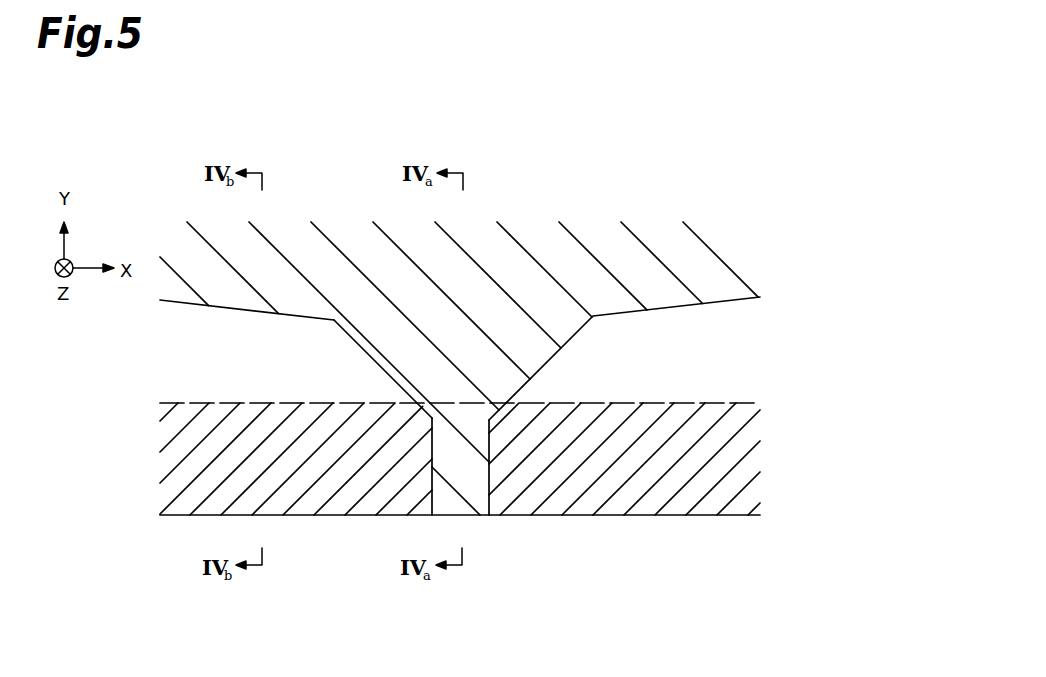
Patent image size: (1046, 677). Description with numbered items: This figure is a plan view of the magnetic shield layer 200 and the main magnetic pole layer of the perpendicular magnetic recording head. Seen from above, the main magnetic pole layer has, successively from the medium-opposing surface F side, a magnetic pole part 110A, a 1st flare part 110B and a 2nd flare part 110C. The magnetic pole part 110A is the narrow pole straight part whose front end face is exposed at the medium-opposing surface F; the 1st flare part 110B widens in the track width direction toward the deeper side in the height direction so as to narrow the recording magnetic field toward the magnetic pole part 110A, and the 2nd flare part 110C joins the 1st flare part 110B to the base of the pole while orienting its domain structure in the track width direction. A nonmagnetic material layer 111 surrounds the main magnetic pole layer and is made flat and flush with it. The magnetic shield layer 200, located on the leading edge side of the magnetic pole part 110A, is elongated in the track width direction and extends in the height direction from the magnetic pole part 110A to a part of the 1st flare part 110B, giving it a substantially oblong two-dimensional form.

The magnetic pole part 110A is at (466, 493).
The 1st flare part 110B is at (382, 365).
The 2nd flare part 110C is at (220, 295).
The nonmagnetic material layer 111 is at (693, 362).
The magnetic shield layer 200 is at (610, 493).
The medium-opposing surface F is at (713, 524).